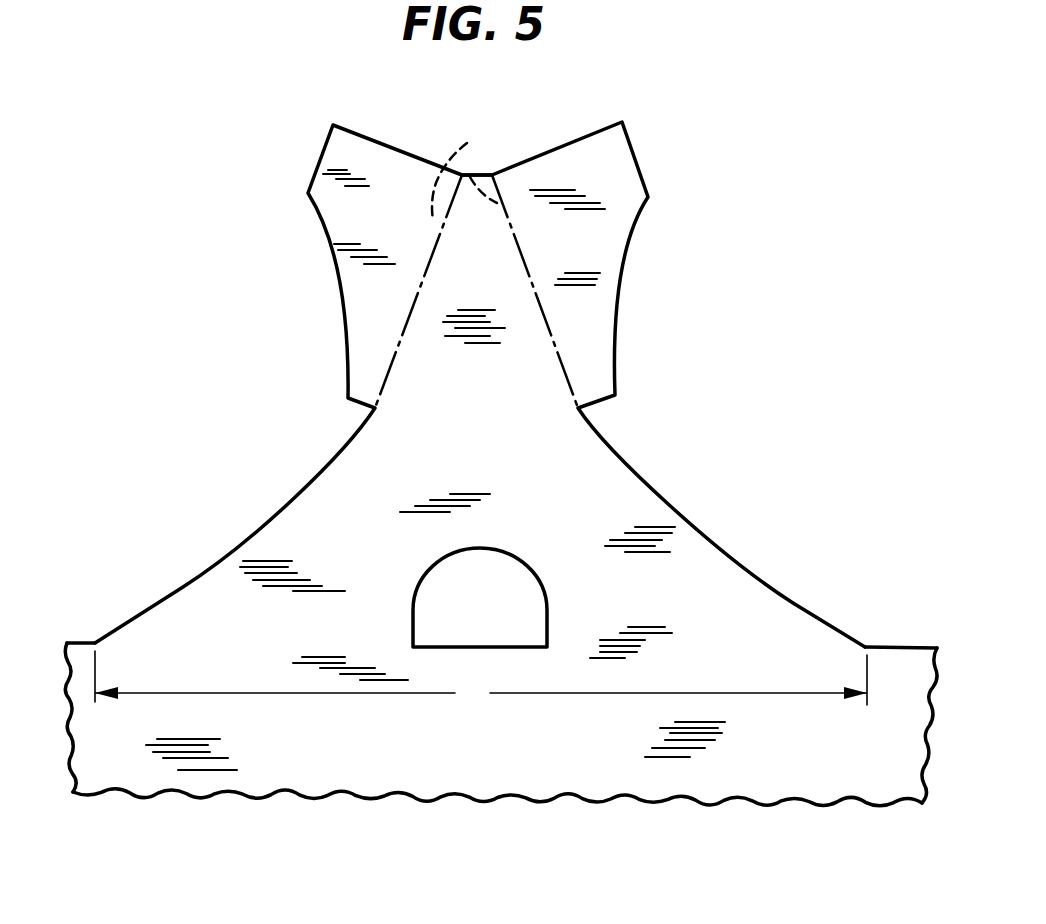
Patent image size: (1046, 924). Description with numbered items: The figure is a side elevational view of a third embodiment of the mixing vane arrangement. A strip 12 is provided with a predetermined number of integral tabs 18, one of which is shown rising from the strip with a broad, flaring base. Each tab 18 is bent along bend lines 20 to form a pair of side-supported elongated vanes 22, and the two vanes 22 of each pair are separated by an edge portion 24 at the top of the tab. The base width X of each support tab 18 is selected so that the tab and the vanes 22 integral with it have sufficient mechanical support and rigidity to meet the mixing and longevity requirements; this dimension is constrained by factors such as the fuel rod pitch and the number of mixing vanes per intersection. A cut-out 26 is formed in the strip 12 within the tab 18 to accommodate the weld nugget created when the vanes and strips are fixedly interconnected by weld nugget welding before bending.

The strip 12 is at (527, 754).
The integral tab 18 is at (490, 461).
The bend line 20 is at (464, 165).
The side-supported elongated vane 22 is at (340, 259).
The edge portion 24 is at (488, 173).
The cut-out 26 is at (415, 593).